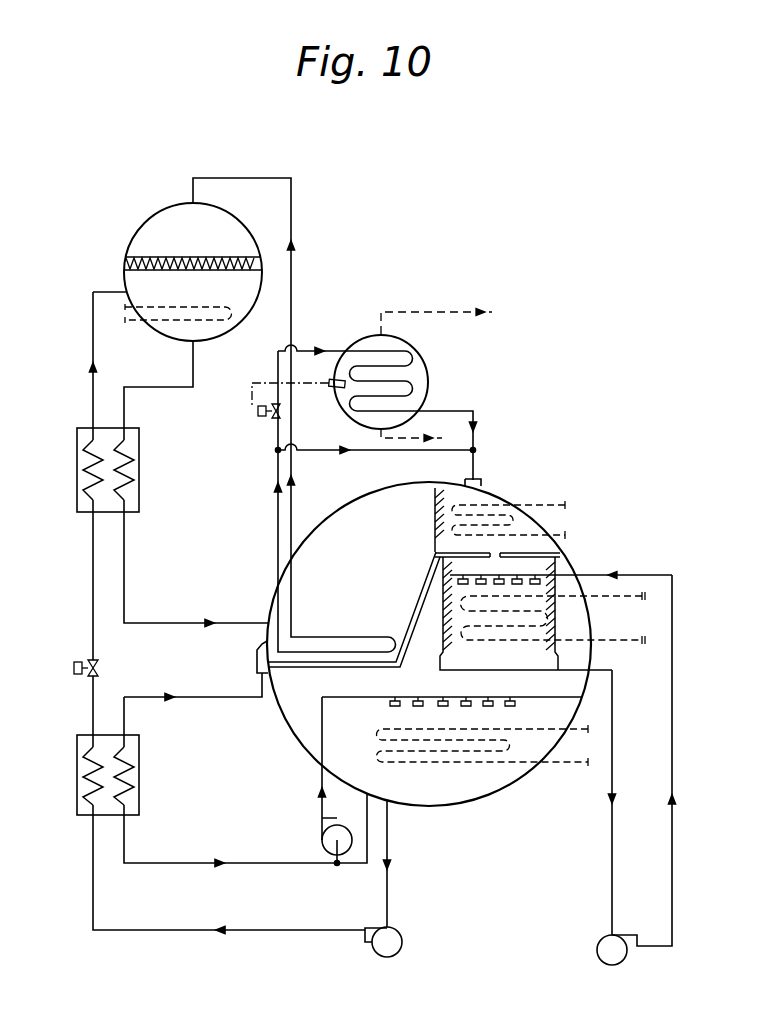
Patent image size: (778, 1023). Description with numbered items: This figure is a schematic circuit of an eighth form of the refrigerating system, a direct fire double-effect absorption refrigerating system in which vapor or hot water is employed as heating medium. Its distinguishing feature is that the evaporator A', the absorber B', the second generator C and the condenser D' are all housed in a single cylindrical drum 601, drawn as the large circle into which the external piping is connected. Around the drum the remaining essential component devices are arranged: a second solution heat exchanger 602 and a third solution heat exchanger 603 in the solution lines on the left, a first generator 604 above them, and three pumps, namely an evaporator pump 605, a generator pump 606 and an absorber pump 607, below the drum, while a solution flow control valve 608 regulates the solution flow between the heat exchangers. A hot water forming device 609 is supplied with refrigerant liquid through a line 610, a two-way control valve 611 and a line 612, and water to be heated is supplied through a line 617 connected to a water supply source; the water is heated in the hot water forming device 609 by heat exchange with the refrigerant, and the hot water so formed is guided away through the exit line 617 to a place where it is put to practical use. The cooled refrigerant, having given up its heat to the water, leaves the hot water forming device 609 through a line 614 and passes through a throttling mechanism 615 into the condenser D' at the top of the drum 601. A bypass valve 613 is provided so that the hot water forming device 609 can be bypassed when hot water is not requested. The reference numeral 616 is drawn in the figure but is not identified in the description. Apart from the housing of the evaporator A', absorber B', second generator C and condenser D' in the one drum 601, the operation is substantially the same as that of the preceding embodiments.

The cylindrical drum 601 is at (464, 655).
The second solution heat exchanger 602 is at (140, 779).
The third solution heat exchanger 603 is at (100, 497).
The first generator 604 is at (152, 213).
The evaporator pump 605 is at (597, 955).
The generator pump 606 is at (372, 950).
The absorber pump 607 is at (322, 832).
The solution flow control valve 608 is at (93, 660).
The hot water forming device 609 is at (427, 368).
The line 610 is at (278, 516).
The two-way control valve 611 is at (262, 418).
The line 612 is at (303, 350).
The bypass valve 613 is at (318, 448).
The line 614 is at (458, 413).
The throttling mechanism 615 is at (479, 478).
The outlet line 616 is at (400, 441).
The water line 617 is at (443, 312).
The evaporator A' is at (556, 598).
The absorber B' is at (455, 773).
The second generator C is at (345, 548).
The condenser D' is at (500, 506).